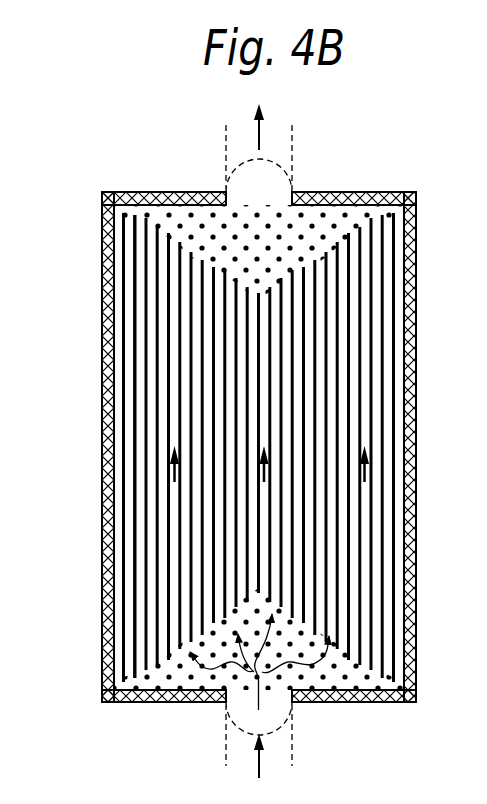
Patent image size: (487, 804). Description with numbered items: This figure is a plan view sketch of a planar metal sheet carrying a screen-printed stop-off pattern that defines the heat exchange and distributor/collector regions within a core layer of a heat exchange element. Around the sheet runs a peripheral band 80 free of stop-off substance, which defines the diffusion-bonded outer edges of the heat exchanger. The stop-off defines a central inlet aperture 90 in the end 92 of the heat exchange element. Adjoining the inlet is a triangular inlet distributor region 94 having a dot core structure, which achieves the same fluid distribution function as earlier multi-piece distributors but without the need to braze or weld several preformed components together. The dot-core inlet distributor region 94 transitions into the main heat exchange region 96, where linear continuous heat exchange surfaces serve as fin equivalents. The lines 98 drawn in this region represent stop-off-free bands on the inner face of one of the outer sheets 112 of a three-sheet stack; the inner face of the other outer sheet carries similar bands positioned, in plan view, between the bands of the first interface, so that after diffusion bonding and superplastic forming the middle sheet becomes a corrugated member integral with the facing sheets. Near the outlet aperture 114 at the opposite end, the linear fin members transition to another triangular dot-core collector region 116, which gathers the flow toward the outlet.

The peripheral band 80 is at (342, 191).
The central inlet aperture 90 is at (277, 692).
The end 92 is at (366, 698).
The triangular inlet distributor region 94 is at (192, 674).
The main heat exchange region 96 is at (130, 584).
The lines 98 is at (135, 385).
The outer sheet 112 is at (100, 316).
The outlet aperture 114 is at (247, 187).
The triangular dot-core collector region 116 is at (170, 231).